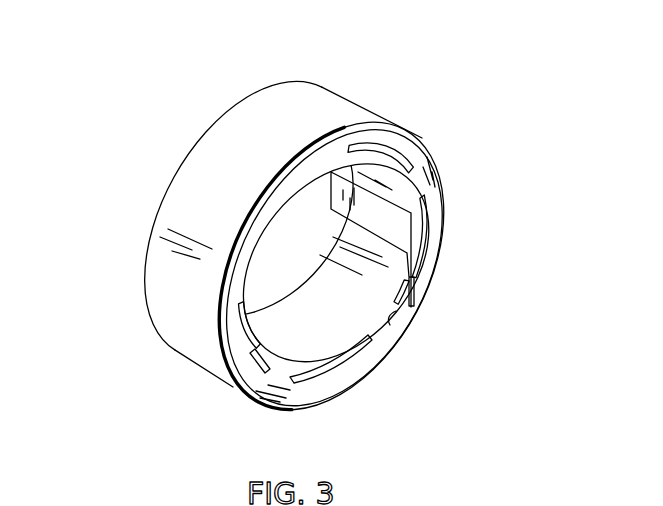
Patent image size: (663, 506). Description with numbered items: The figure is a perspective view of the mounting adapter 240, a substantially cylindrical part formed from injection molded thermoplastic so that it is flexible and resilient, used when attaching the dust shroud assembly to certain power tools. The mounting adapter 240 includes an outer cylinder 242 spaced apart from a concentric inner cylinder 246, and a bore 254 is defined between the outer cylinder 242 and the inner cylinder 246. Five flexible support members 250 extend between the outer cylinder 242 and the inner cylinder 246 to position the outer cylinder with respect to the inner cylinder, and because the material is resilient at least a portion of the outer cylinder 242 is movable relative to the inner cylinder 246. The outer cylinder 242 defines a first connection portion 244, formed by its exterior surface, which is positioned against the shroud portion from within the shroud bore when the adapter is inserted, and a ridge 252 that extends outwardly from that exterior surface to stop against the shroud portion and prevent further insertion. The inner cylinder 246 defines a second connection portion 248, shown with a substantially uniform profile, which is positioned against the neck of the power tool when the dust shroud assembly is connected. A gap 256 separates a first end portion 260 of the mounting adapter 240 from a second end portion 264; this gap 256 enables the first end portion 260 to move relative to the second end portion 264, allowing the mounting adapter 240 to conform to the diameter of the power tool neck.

The mounting adapter 240 is at (78, 189).
The first connection portion 244 is at (255, 164).
The ridge 252 is at (422, 138).
The second connection portion 248 is at (330, 306).
The gap 256 is at (426, 322).
The first end portion 260 is at (392, 324).
The flexible support members 250 is at (333, 157).
The outer cylinder 242 is at (427, 206).
The second end portion 264 is at (427, 263).
The inner cylinder 246 is at (331, 362).
The bore 254 is at (243, 351).